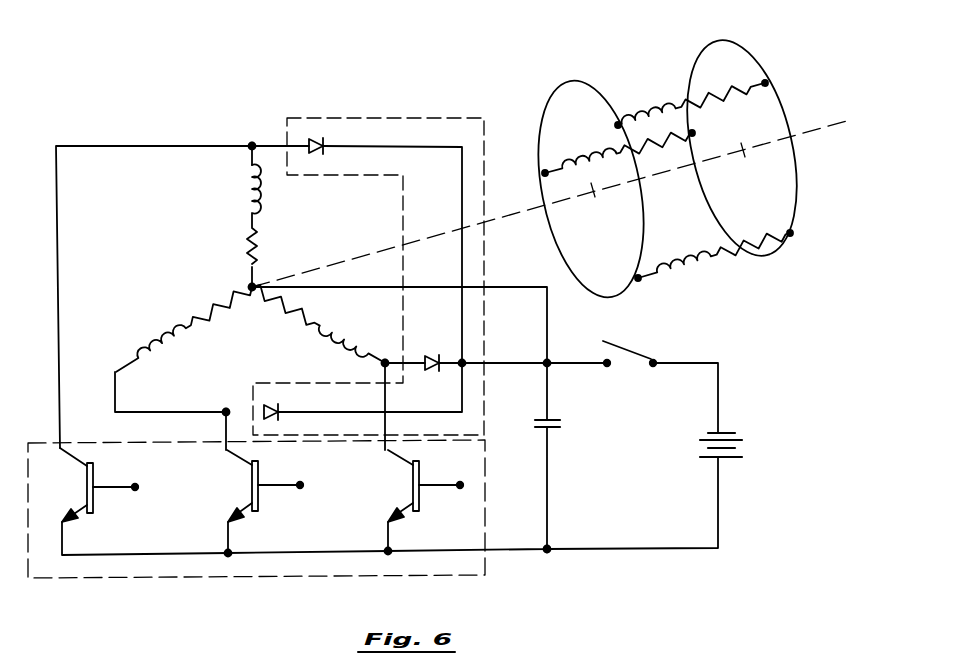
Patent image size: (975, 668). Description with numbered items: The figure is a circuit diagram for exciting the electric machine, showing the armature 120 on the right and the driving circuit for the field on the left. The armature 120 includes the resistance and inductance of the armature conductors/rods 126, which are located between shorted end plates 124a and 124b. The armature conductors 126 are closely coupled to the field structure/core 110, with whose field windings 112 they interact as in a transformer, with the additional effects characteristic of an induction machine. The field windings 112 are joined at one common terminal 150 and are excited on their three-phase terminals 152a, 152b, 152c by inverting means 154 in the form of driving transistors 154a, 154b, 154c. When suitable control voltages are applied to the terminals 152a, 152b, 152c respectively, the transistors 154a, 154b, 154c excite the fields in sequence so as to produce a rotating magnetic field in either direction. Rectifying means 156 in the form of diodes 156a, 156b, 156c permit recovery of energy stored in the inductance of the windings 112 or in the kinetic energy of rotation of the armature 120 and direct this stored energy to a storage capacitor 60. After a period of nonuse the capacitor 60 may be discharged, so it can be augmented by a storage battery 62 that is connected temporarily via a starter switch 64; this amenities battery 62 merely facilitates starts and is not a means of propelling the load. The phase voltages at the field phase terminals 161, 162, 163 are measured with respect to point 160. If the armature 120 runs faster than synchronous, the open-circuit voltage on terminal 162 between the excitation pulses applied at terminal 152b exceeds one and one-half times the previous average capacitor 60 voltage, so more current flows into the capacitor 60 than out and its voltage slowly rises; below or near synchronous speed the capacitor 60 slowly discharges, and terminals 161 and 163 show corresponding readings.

The field structure/core 110 is at (244, 80).
The armature 120 is at (614, 48).
The shorted end plate 124a is at (570, 82).
The shorted end plate 124b is at (752, 61).
The armature conductors/rods 126 is at (630, 118).
The field windings 112 is at (252, 220).
The common terminal 150 is at (252, 287).
The field phase terminal 161 is at (252, 146).
The field phase terminal 162 is at (226, 412).
The field phase terminal 163 is at (385, 360).
The rectifying means 156 is at (439, 116).
The diode 156a is at (323, 133).
The diode 156b is at (428, 352).
The diode 156c is at (272, 407).
The inverting means 154 is at (113, 580).
The driving transistor 154a is at (93, 510).
The driving transistor 154b is at (258, 510).
The driving transistor 154c is at (419, 506).
The 3-phase terminal 152a is at (138, 487).
The 3-phase terminal 152b is at (302, 485).
The 3-phase terminal 152c is at (463, 485).
The storage capacitor 60 is at (557, 420).
The storage battery 62 is at (735, 457).
The starter switch 64 is at (630, 352).
The reference point 160 is at (548, 552).